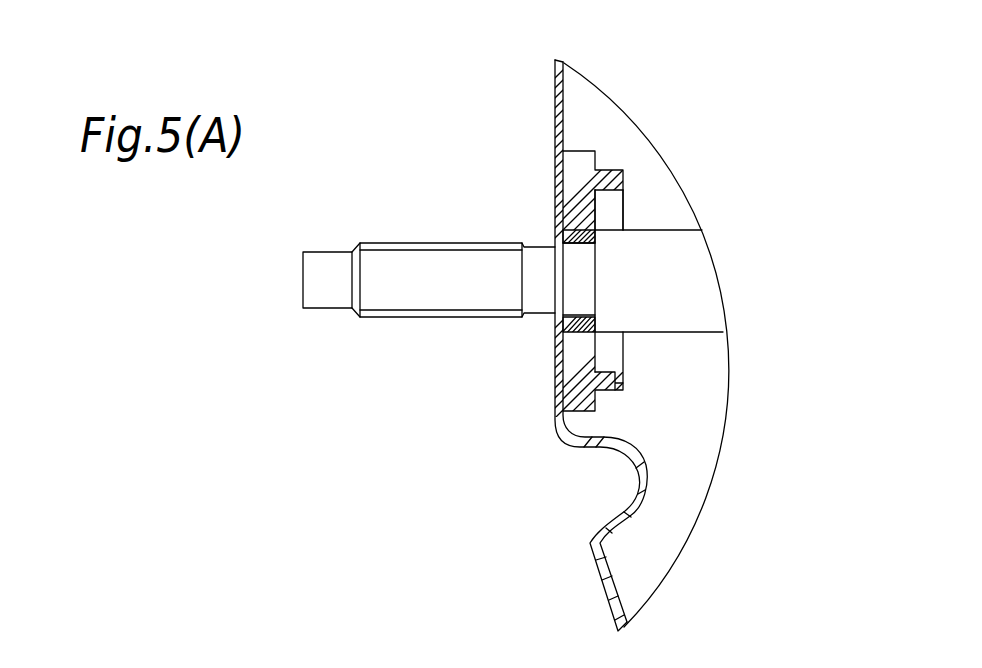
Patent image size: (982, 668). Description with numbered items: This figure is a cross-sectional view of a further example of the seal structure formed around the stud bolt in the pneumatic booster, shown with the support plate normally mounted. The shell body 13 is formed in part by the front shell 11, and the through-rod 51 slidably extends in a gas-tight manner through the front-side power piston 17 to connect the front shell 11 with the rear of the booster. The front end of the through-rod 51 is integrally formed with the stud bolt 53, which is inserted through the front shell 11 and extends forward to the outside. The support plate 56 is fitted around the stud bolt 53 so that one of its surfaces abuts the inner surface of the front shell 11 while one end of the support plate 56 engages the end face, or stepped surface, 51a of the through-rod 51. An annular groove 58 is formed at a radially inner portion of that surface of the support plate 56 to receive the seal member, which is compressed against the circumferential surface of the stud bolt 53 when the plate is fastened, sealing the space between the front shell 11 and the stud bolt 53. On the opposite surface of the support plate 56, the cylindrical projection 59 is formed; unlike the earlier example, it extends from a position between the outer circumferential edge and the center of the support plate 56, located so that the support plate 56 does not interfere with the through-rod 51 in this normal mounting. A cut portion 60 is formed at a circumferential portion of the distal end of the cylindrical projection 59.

The front shell 11 is at (602, 565).
The shell body 13 is at (555, 97).
The power piston 17 is at (559, 233).
The through-rod 51 is at (705, 278).
The end face (stepped surface) 51a is at (591, 222).
The stud bolt 53 is at (396, 262).
The support plate 56 is at (580, 150).
The annular groove 58 is at (557, 318).
The cylindrical projection 59 is at (615, 178).
The cut portion 60 is at (623, 382).